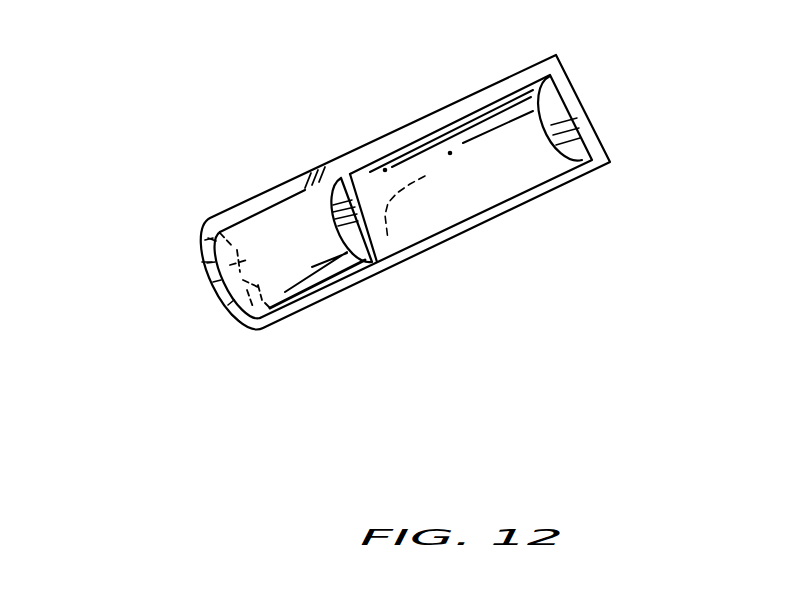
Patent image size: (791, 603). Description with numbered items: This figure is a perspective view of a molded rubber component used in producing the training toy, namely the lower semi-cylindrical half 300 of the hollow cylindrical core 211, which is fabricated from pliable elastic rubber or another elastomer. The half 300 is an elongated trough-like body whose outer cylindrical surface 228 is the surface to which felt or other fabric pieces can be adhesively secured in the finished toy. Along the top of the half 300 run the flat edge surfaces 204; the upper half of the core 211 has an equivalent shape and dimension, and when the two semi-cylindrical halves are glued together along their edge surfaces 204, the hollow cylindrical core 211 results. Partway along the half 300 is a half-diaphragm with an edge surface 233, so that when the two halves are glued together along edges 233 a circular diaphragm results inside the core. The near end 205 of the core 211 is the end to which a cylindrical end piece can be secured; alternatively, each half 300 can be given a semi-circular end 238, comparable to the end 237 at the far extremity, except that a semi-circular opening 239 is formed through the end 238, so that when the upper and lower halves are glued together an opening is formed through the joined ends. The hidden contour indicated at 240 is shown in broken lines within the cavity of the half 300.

The edge surface 204 is at (490, 85).
The end of core 205 is at (238, 320).
The hollow cylindrical core 211 is at (202, 262).
The outer cylindrical surface 228 is at (205, 243).
The edge surface 233 is at (350, 174).
The end 237 is at (550, 98).
The semi-circular end 238 is at (247, 260).
The semi-circular opening 239 is at (205, 287).
The hidden inner contour 240 is at (418, 180).
The lower semi-cylindrical half 300 is at (285, 342).